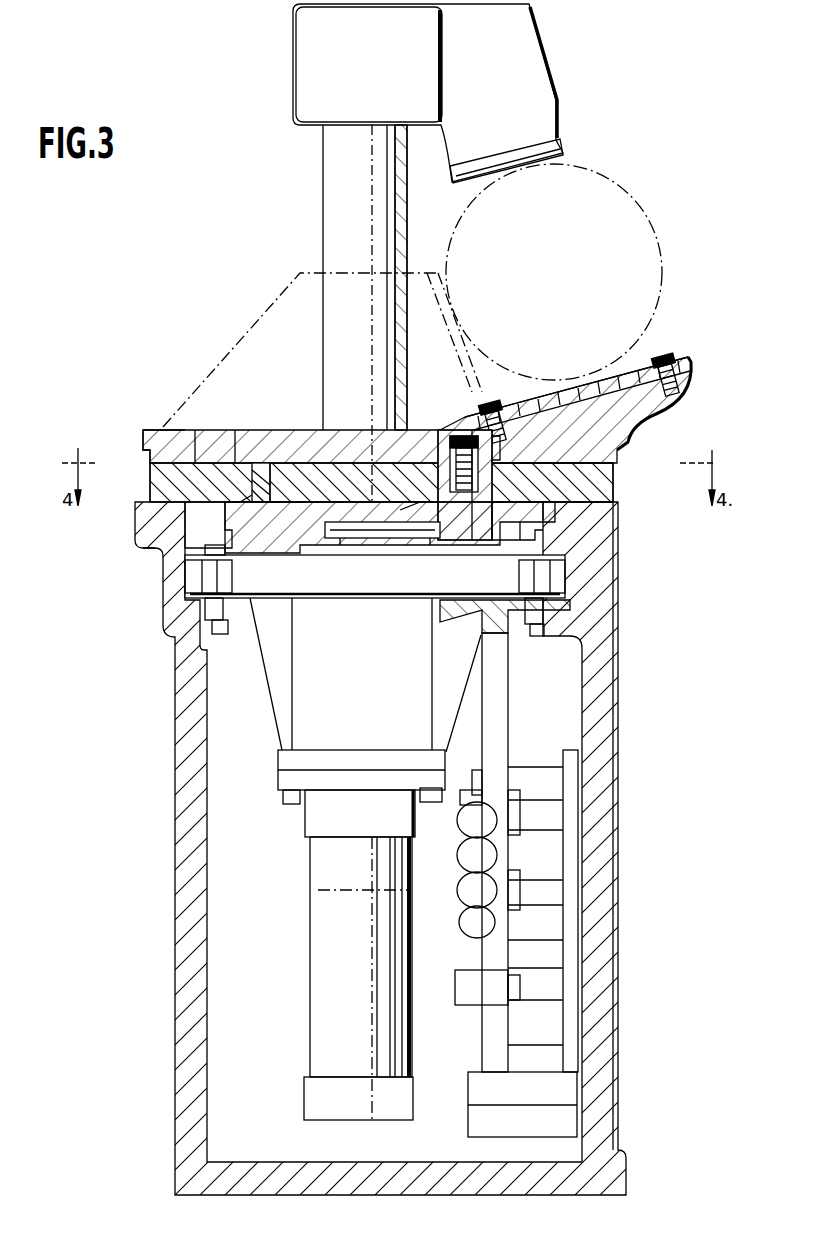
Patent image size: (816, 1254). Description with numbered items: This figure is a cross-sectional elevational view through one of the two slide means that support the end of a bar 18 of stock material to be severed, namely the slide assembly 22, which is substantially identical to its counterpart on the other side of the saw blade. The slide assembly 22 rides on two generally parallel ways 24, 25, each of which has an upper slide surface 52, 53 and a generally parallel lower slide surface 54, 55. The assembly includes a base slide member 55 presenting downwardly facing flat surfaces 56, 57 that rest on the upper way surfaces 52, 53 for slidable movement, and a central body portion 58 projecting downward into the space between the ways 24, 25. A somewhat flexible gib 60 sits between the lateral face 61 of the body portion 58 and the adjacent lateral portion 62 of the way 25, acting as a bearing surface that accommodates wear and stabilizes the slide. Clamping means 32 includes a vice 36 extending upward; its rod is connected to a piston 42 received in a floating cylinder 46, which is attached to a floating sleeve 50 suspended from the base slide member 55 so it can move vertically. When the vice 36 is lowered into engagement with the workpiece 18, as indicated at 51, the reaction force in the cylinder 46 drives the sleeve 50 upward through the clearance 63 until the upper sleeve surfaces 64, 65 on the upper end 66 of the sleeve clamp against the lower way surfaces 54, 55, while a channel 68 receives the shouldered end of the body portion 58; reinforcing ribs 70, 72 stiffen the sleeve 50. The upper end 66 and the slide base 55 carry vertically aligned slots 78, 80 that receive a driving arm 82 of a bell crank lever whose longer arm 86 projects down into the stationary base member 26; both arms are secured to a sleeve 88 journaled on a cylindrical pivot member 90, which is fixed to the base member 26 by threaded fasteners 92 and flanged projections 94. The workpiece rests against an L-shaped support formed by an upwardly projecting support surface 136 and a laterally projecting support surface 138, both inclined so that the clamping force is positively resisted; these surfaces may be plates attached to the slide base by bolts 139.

The bar of stock material 18 is at (664, 270).
The slide assembly 22 is at (247, 312).
The way 24 is at (616, 484).
The way 25 is at (145, 470).
The stationary base member 26 is at (620, 570).
The clamping means 32 is at (320, 190).
The vice 36 is at (383, 78).
The piston 42 is at (318, 894).
The floating cylinder 46 is at (310, 984).
The floating sleeve 50 is at (262, 684).
The engagement of vice with workpiece 51 is at (468, 184).
The upper slide surface 52 is at (618, 454).
The upper slide surface 53 is at (178, 430).
The lower slide surface 54 is at (556, 532).
The base slide member 55 is at (355, 440).
The downwardly facing flat surface 56 is at (210, 462).
The downwardly facing flat surface 57 is at (556, 466).
The central body portion 58 is at (336, 506).
The gib 60 is at (262, 478).
The lateral face 61 is at (272, 480).
The lateral portion 62 is at (248, 470).
The clearance 63 is at (208, 540).
The upper sleeve surface 64 is at (520, 494).
The upper sleeve surface 65 is at (252, 496).
The upper end of sleeve 66 is at (358, 533).
The channel 68 is at (420, 506).
The reinforcing rib 70 is at (446, 730).
The reinforcing rib 72 is at (276, 718).
The slot 78 is at (486, 522).
The slot 80 is at (500, 458).
The driving arm 82 is at (446, 484).
The longer arm 86 is at (508, 712).
The sleeve 88 is at (508, 628).
The pivot member 90 is at (390, 580).
The threaded fastener 92 is at (226, 612).
The flanged projection 94 is at (222, 626).
The upwardly projecting support surface 136 is at (455, 256).
The laterally projecting support surface 138 is at (548, 394).
The bolt 139 is at (490, 404).